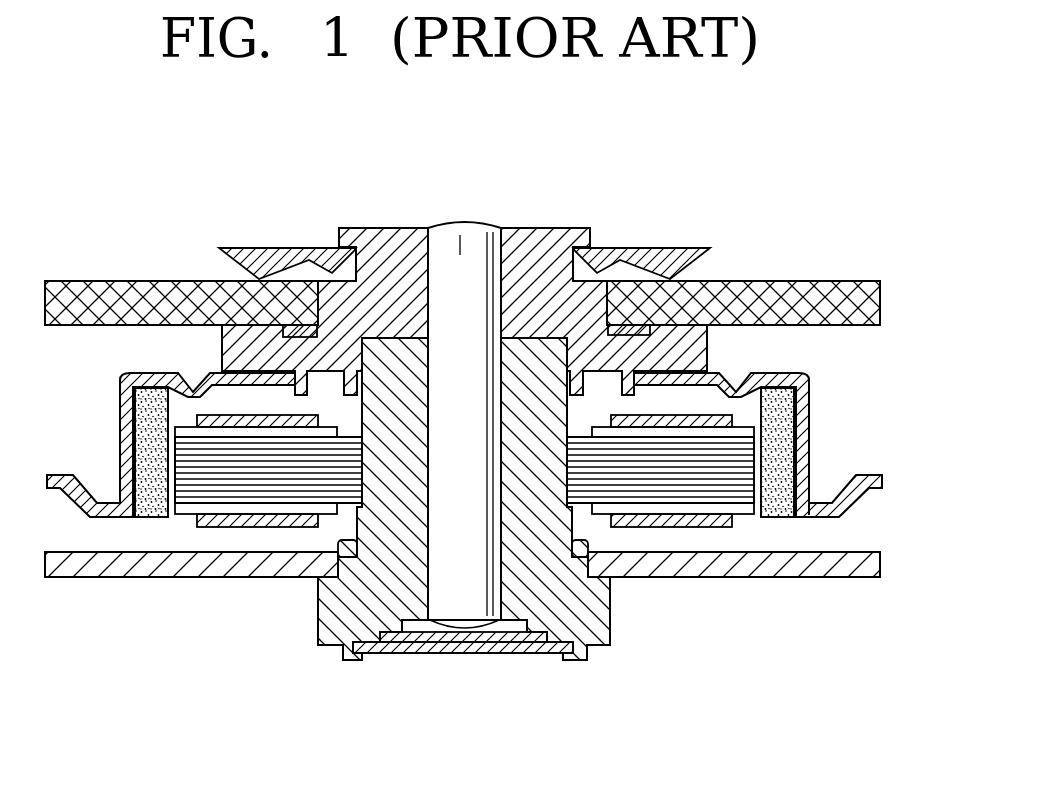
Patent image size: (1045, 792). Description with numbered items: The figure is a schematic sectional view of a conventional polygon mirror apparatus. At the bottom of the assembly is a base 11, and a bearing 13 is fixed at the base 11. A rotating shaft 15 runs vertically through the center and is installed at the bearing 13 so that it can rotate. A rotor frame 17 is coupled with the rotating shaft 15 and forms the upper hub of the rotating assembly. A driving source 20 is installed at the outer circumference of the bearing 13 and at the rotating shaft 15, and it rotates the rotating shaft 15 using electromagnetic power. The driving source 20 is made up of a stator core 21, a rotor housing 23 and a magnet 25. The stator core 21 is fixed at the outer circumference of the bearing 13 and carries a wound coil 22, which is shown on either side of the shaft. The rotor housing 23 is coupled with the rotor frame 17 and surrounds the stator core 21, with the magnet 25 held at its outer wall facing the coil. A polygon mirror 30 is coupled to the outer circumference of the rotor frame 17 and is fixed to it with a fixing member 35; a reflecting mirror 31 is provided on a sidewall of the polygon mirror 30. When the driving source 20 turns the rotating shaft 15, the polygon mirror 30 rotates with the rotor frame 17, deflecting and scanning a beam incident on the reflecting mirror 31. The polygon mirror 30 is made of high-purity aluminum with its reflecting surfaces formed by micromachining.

The base 11 is at (837, 573).
The bearing 13 is at (603, 648).
The rotating shaft 15 is at (457, 603).
The rotor frame 17 is at (533, 240).
The driving source 20 is at (480, 432).
The stator core 21 is at (712, 480).
The wound coil 22 is at (660, 523).
The rotor housing 23 is at (810, 437).
The magnet 25 is at (777, 502).
The polygon mirror 30 is at (494, 263).
The reflecting mirror 31 is at (880, 305).
The fixing member 35 is at (685, 250).